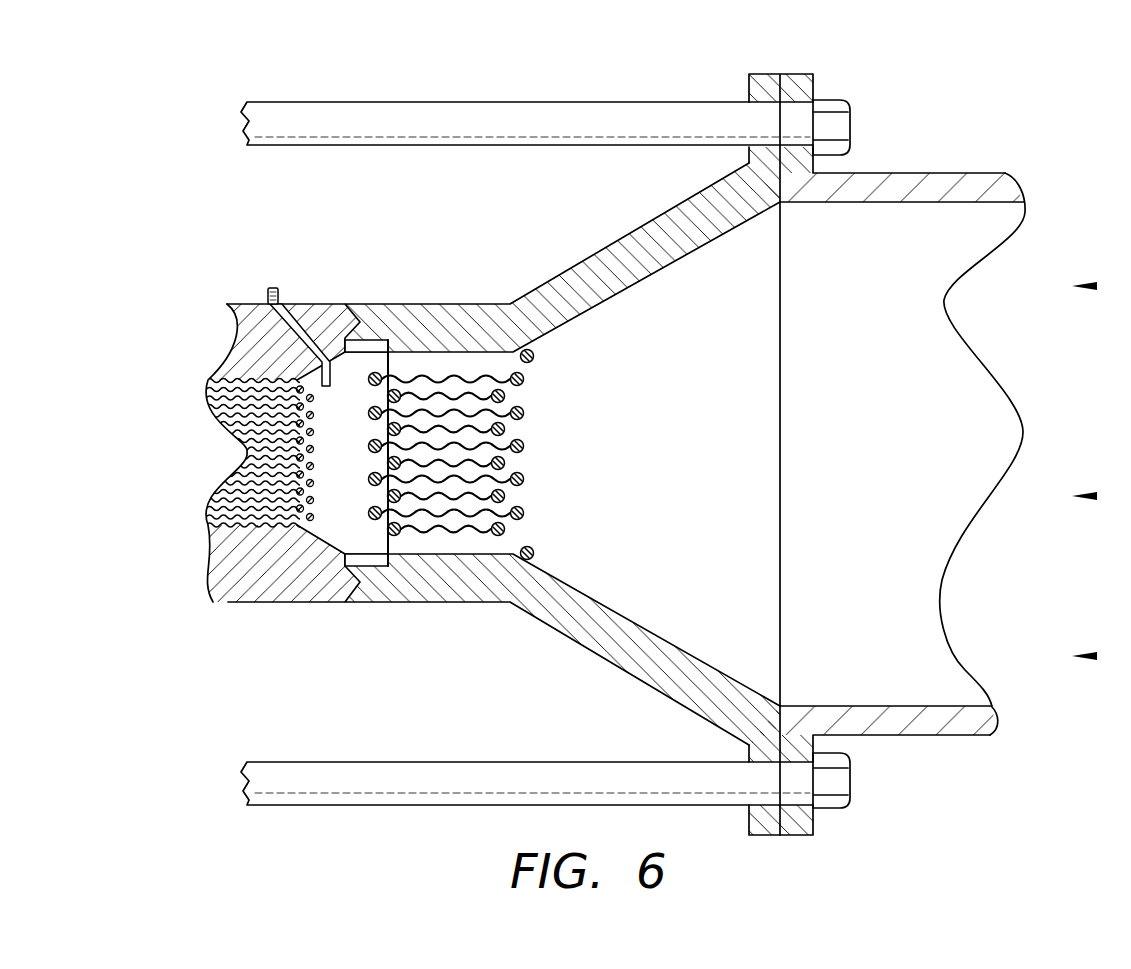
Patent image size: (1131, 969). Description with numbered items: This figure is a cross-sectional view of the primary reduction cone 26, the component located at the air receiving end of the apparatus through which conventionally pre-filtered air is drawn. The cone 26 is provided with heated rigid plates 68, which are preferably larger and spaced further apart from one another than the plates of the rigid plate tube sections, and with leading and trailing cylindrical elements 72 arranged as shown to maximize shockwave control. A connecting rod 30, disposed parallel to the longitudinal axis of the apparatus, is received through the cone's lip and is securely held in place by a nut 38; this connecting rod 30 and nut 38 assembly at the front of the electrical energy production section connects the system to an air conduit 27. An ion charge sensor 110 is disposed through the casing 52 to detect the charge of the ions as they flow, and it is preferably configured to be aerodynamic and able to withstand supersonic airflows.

The primary reduction cone 26 is at (622, 246).
The air conduit 27 is at (966, 178).
The connecting rod 30 is at (540, 104).
The nut 38 is at (840, 124).
The casing 52 is at (298, 582).
The heated rigid plates 68 is at (560, 399).
The leading and trailing cylindrical elements 72 is at (524, 480).
The ion charge sensor 110 is at (275, 288).